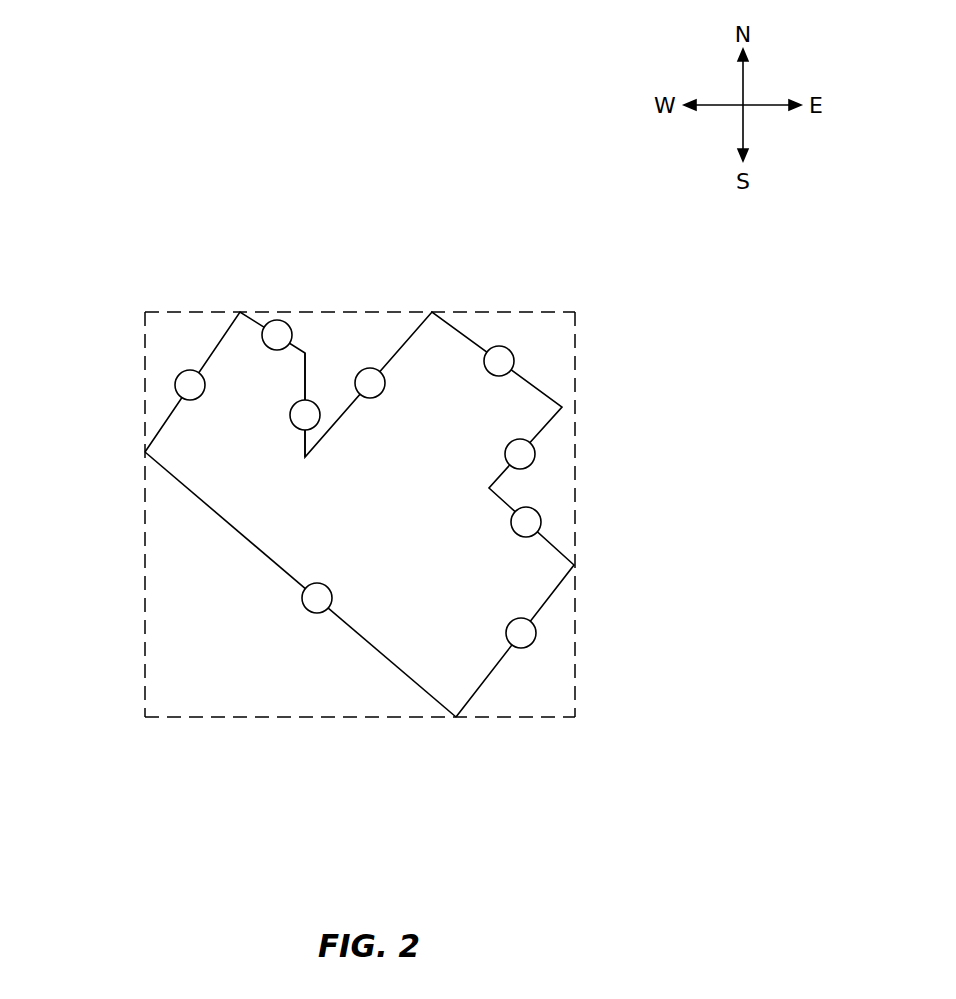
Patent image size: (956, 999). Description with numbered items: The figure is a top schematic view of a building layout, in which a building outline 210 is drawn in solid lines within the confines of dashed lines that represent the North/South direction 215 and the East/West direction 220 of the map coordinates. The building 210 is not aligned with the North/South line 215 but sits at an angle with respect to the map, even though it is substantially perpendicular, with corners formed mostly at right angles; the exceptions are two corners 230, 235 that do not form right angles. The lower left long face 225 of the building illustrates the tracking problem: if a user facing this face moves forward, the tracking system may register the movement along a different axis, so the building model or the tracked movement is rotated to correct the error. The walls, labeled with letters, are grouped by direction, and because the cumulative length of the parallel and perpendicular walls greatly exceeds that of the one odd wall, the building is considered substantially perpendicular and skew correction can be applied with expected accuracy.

The building outline 210 is at (359, 477).
The North/South dashed line 215 is at (144, 355).
The East/West dashed line 220 is at (313, 311).
The lower left long face 225 is at (255, 547).
The corner 230 is at (305, 355).
The corner 235 is at (305, 457).